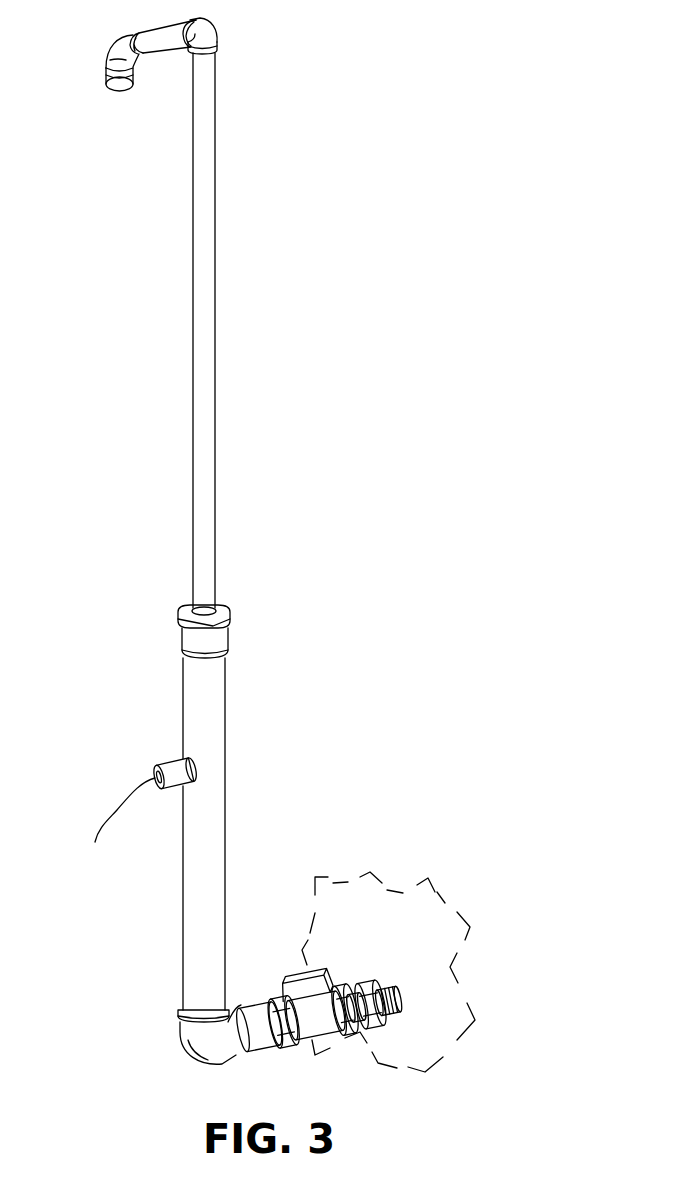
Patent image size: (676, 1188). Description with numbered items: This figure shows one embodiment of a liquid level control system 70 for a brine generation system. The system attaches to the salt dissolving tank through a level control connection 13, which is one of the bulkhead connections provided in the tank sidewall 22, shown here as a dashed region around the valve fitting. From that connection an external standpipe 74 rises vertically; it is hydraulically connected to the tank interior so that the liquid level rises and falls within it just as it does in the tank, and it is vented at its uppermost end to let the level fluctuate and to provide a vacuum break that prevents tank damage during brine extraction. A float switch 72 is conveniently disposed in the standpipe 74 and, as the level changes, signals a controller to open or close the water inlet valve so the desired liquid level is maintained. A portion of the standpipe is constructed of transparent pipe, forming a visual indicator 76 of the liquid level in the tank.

The liquid level control system 70 is at (462, 485).
The external standpipe 74 is at (216, 379).
The visual indicator 76 is at (225, 791).
The float switch 72 is at (171, 759).
The level control connection 13 is at (368, 975).
The tank sidewall 22 is at (440, 880).